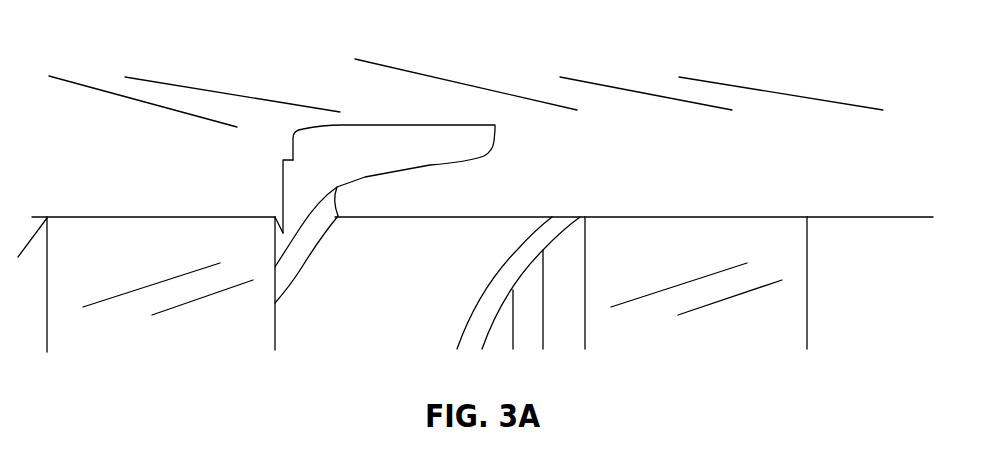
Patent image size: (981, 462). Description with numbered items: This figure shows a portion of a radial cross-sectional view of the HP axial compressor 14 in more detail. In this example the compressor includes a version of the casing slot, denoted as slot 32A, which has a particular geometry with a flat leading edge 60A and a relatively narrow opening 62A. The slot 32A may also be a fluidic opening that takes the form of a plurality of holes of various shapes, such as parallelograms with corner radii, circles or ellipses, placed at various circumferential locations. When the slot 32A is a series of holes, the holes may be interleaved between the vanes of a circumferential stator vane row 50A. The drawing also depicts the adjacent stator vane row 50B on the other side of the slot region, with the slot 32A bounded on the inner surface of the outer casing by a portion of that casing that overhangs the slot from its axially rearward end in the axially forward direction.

The HP axial compressor 14 is at (798, 60).
The slot 32A is at (407, 137).
The opening 62A is at (332, 186).
The flat leading edge 60A is at (312, 232).
The stator vane row 50A is at (168, 230).
The stator vane row 50B is at (645, 230).